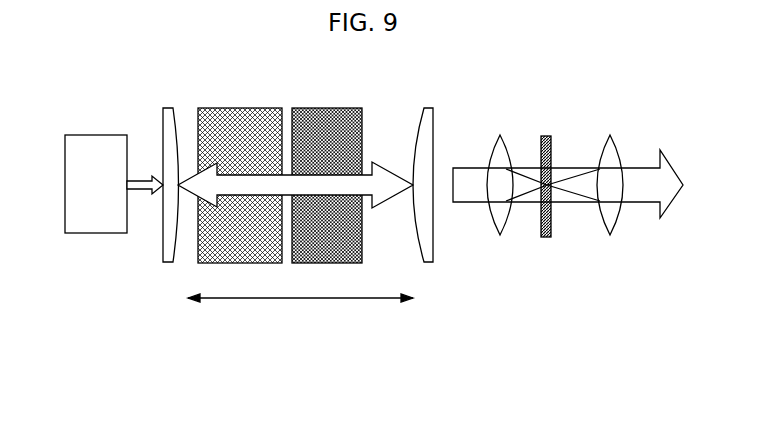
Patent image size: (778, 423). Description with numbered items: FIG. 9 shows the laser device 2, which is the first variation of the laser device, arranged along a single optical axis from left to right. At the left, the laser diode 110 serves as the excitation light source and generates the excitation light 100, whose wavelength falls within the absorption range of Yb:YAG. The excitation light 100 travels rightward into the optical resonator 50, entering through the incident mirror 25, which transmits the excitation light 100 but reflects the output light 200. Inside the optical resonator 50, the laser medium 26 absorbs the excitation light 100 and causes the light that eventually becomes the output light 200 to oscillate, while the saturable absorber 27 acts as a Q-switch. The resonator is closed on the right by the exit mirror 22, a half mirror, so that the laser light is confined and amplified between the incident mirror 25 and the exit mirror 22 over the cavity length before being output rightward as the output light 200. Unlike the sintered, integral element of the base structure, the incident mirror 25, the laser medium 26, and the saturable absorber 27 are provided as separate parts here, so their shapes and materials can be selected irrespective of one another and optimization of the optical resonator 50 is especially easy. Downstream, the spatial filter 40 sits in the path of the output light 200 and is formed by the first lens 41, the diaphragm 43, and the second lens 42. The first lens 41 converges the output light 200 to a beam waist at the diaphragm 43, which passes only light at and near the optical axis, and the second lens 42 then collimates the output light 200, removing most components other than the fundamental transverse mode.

The laser device 2 is at (468, 388).
The laser diode 110 is at (83, 135).
The excitation light 100 is at (147, 178).
The incident mirror 25 is at (167, 117).
The laser medium 26 is at (235, 122).
The saturable absorber 27 is at (323, 117).
The exit mirror 22 is at (425, 117).
The optical resonator 50 is at (299, 213).
The spatial filter 40 is at (568, 214).
The first lens 41 is at (498, 148).
The second lens 42 is at (608, 137).
The diaphragm 43 is at (547, 137).
The output light 200 is at (643, 163).